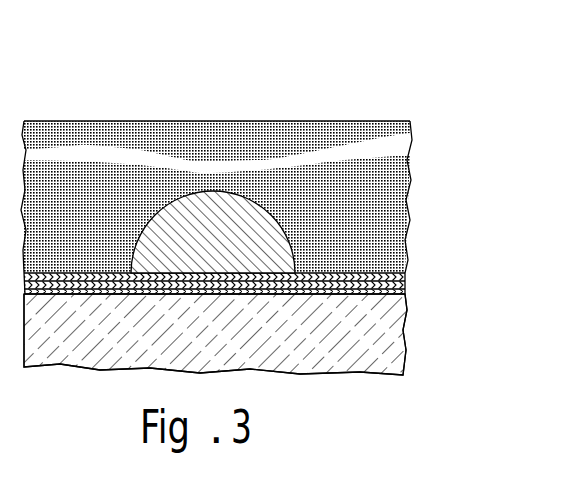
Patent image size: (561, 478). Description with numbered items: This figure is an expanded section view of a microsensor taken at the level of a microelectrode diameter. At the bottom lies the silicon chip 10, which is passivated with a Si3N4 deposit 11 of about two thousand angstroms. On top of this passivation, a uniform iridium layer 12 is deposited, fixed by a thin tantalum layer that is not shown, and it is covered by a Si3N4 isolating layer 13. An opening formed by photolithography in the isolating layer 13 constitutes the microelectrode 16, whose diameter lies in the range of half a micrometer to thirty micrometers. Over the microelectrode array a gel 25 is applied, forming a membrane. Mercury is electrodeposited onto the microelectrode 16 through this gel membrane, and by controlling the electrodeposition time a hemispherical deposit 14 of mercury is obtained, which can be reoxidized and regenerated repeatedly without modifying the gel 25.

The silicon chip 10 is at (377, 340).
The Si3N4 deposit 11 is at (403, 294).
The iridium layer 12 is at (403, 286).
The Si3N4 isolating layer 13 is at (405, 276).
The hemispherical deposit 14 is at (296, 256).
The microelectrode 16 is at (152, 202).
The gel 25 is at (315, 187).